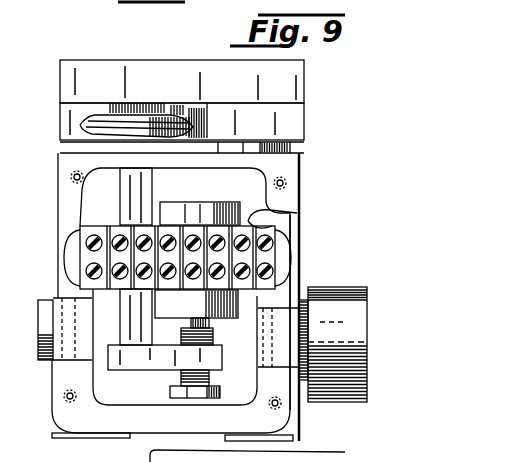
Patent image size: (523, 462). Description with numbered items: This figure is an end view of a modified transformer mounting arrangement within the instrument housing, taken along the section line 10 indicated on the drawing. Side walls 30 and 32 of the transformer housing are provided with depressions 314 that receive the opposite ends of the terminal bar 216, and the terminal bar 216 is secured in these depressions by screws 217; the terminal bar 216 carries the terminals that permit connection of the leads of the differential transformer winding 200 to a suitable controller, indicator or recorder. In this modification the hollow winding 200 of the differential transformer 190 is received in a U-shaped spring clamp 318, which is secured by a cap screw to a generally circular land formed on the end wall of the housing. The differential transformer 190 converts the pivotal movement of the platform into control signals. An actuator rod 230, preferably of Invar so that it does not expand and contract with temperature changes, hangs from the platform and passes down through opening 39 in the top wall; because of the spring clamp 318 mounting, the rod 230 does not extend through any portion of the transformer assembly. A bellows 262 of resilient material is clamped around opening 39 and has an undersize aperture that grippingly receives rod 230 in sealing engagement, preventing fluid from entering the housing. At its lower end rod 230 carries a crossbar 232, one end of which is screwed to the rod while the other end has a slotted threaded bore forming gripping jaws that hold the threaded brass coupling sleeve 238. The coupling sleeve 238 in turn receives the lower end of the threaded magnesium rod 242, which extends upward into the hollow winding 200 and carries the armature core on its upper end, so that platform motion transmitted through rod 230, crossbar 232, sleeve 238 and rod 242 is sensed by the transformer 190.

The bellows 262 is at (83, 124).
The section line 10 is at (40, 185).
The side wall 32 is at (301, 225).
The actuator rod 230 is at (156, 182).
The differential transformer winding 200 is at (216, 206).
The U-shaped spring clamp 318 is at (298, 222).
The terminal bar 216 is at (80, 230).
The side wall 30 is at (70, 237).
The depressions 314 is at (78, 247).
The screws 217 is at (86, 268).
The threaded magnesium rod 242 is at (199, 316).
The differential transformer 190 is at (214, 321).
The crossbar 232 is at (152, 358).
The coupling sleeve 238 is at (199, 397).
The opening 39 is at (364, 304).